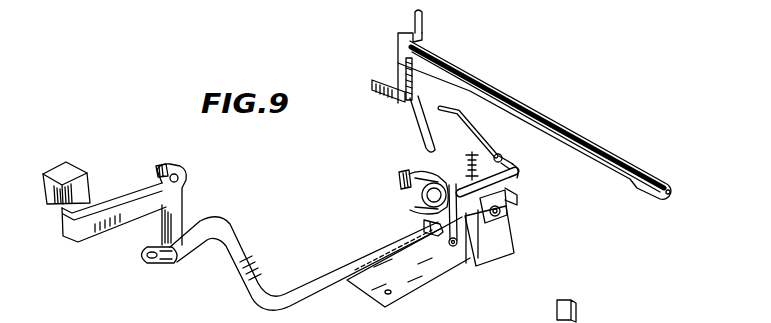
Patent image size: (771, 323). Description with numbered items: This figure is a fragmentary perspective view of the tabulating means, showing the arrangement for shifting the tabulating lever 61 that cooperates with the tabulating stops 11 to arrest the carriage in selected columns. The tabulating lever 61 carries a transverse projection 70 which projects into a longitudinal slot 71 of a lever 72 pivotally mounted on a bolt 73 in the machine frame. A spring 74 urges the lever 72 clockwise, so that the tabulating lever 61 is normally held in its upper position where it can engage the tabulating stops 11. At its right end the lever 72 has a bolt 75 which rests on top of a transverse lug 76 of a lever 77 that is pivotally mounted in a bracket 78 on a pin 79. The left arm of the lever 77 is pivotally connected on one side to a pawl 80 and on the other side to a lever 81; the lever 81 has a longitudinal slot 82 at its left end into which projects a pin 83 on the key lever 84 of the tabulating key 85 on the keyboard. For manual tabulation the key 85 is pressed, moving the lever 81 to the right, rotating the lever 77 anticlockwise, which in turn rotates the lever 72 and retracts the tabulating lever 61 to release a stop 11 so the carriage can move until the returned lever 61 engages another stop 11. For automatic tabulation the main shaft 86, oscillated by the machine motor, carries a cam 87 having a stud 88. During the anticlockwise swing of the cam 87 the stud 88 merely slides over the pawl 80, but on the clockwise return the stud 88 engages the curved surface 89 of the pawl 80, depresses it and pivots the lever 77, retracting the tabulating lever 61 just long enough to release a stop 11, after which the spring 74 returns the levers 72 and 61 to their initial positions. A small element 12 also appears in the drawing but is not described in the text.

The tabulating stop 11 is at (422, 22).
The clip 12 is at (565, 310).
The tabulating lever 61 is at (532, 103).
The transverse projection 70 is at (393, 83).
The longitudinal slot 71 is at (392, 100).
The lever 72 is at (420, 142).
The bolt 73 is at (455, 116).
The spring 74 is at (468, 165).
The bolt 75 is at (499, 154).
The transverse lug 76 is at (508, 168).
The lever 77 is at (519, 176).
The bracket 78 is at (428, 272).
The pin 79 is at (502, 212).
The pawl 80 is at (467, 266).
The lever 81 is at (325, 275).
The longitudinal slot 82 is at (151, 259).
The pin 83 is at (176, 258).
The key lever 84 is at (127, 203).
The tabulating key 85 is at (72, 170).
The main shaft 86 is at (404, 177).
The cam 87 is at (408, 192).
The stud 88 is at (420, 226).
The curved surface 89 is at (488, 248).